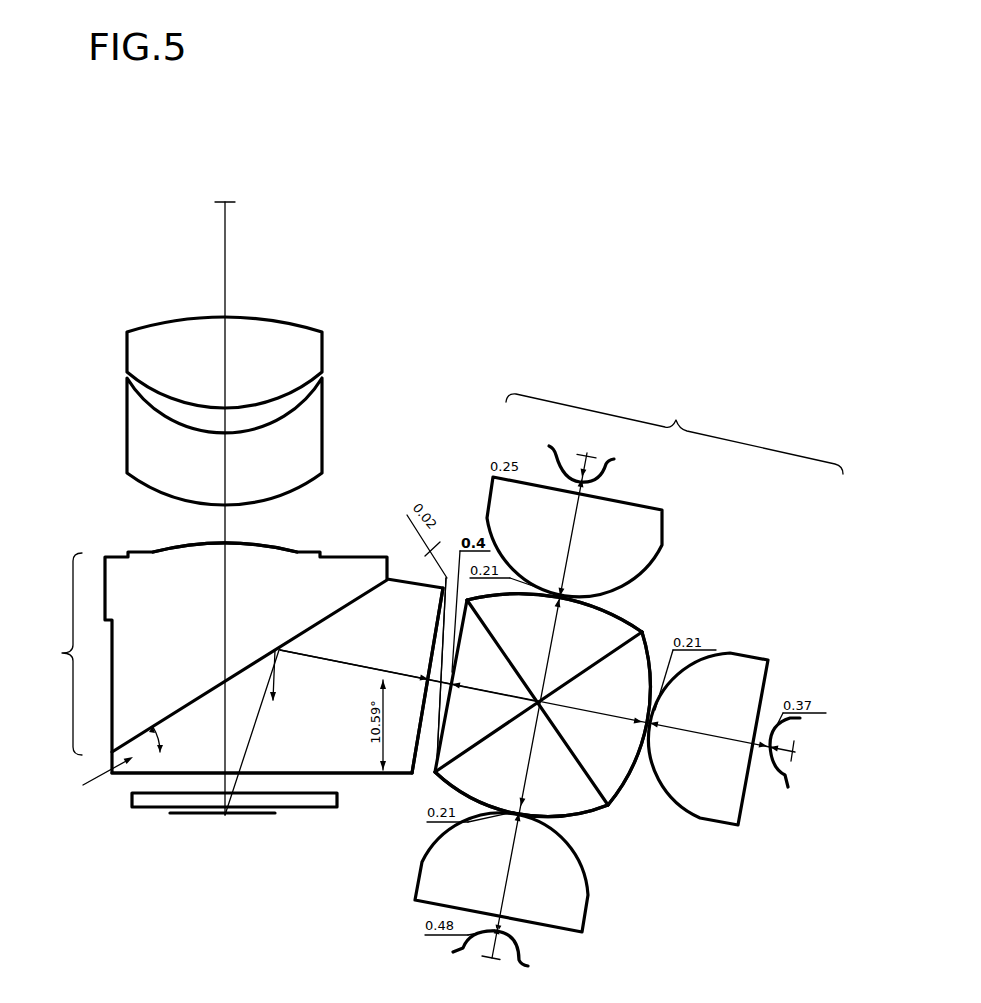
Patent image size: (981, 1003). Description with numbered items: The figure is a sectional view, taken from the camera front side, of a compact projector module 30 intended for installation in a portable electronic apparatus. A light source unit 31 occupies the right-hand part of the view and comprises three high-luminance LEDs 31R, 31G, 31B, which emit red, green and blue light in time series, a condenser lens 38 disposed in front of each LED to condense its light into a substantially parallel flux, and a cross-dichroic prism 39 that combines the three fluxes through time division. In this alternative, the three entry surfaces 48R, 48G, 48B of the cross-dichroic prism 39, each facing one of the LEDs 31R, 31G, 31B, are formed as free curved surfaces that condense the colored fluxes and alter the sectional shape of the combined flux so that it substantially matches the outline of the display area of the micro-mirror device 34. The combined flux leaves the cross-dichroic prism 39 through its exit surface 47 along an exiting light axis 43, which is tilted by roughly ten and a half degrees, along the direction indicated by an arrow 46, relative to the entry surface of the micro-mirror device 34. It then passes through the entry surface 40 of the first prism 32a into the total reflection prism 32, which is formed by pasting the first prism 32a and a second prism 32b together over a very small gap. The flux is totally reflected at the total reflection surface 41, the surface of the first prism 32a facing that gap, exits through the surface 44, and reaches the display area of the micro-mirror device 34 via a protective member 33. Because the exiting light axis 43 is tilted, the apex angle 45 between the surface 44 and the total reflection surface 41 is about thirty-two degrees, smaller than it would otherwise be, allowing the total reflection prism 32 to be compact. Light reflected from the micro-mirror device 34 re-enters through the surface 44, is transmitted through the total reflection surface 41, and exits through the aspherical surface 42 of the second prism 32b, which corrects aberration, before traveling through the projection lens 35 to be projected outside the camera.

The projector module 30 is at (611, 277).
The light source unit 31 is at (648, 685).
The high-luminance LED 31B is at (612, 470).
The high-luminance LED 31G is at (777, 776).
The high-luminance LED 31R is at (523, 958).
The total reflection prism 32 is at (236, 657).
The first prism 32a is at (348, 762).
The second prism 32b is at (293, 560).
The protective member 33 is at (147, 810).
The micro-mirror device 34 is at (253, 815).
The projection lens 35 is at (303, 417).
The condenser lens 38 is at (643, 538).
The cross-dichroic prism 39 is at (585, 716).
The entry surface 40 is at (411, 772).
The total reflection surface 41 is at (370, 597).
The aspherical surface 42 is at (153, 545).
The exiting light axis 43 is at (324, 660).
The surface 44 is at (283, 770).
The apex angle 45 is at (92, 780).
The arrow 46 is at (285, 650).
The exit surface 47 is at (421, 778).
The entry surface 48B is at (627, 610).
The entry surface 48G is at (648, 653).
The entry surface 48R is at (572, 815).